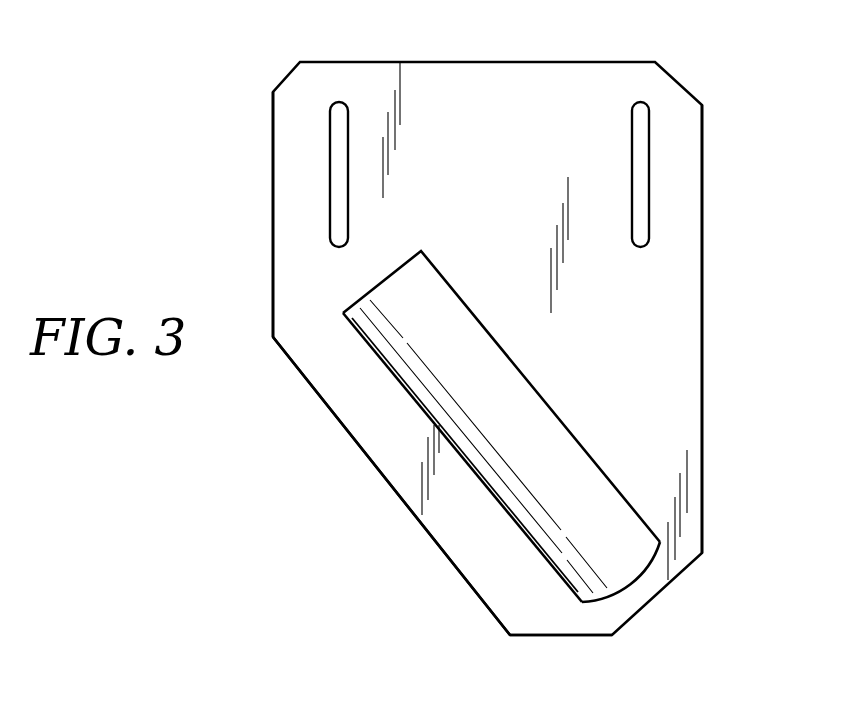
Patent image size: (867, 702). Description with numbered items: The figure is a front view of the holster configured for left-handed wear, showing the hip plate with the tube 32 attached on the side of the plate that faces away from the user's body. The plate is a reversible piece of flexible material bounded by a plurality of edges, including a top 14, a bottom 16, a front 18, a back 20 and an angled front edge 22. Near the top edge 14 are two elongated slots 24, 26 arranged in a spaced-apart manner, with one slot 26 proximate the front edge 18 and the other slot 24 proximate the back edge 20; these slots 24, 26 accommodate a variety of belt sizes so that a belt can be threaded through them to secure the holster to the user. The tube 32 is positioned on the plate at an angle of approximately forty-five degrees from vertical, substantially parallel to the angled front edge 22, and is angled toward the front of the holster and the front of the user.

The top edge 14 is at (428, 61).
The bottom edge 16 is at (533, 637).
The front edge 18 is at (272, 208).
The back edge 20 is at (703, 238).
The angled front edge 22 is at (451, 555).
The elongated slot 24 is at (631, 138).
The elongated slot 26 is at (329, 128).
The tube 32 is at (537, 392).